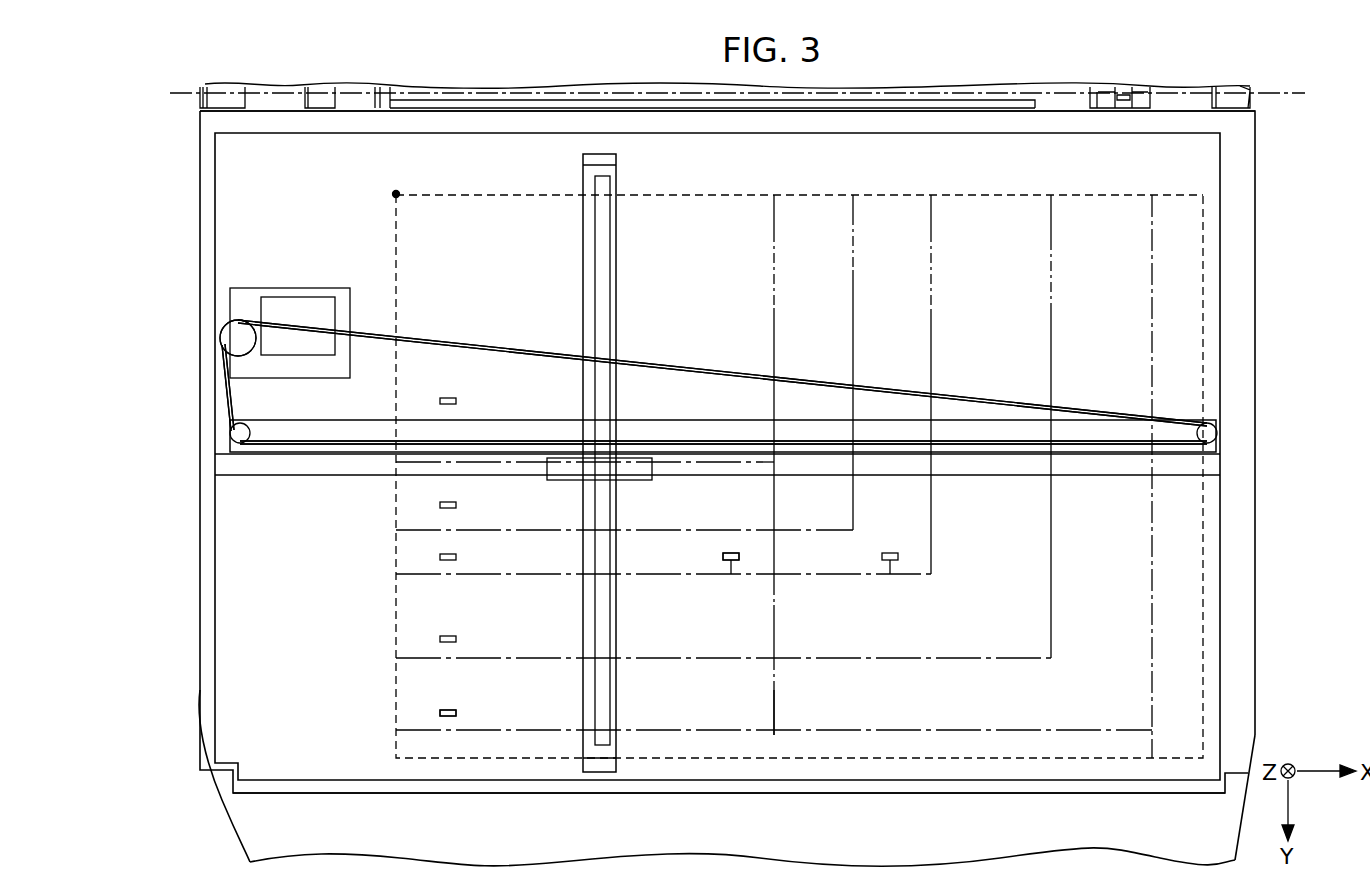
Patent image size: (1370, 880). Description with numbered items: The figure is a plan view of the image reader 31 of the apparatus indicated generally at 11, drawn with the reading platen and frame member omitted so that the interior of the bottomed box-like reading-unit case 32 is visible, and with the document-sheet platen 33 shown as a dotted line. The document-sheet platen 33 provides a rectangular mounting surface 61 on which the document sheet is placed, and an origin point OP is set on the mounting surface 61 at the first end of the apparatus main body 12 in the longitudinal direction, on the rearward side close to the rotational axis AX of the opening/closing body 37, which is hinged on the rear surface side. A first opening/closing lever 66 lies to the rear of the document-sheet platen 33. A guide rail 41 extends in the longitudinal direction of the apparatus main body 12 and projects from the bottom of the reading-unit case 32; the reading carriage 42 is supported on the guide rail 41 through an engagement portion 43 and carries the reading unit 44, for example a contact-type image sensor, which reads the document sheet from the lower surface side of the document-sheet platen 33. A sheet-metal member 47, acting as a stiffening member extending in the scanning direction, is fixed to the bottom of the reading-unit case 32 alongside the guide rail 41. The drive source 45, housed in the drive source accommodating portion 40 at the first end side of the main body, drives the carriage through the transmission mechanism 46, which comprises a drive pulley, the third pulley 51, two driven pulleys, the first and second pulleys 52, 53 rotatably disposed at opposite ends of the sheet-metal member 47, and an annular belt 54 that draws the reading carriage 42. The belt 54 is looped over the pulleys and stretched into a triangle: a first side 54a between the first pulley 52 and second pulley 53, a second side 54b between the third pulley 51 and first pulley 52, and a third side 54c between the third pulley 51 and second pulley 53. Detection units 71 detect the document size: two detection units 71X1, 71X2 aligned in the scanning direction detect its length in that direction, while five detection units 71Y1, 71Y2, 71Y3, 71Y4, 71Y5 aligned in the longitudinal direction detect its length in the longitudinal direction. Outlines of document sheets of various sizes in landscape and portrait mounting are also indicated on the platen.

The image reading apparatus 11 is at (1280, 241).
The apparatus main body 12 is at (243, 838).
The image reader 31 is at (1257, 540).
The reading-unit case 32 is at (313, 773).
The document-sheet platen 33 is at (1068, 758).
The opening/closing body 37 is at (200, 101).
The drive source accommodating portion 40 is at (248, 288).
The guide rail 41 is at (305, 476).
The reading carriage 42 is at (617, 287).
The engagement portion 43 is at (640, 480).
The reading unit 44 is at (600, 237).
The drive source 45 is at (318, 297).
The transmission mechanism 46 is at (214, 311).
The sheet-metal member 47 is at (648, 426).
The third pulley 51 is at (220, 338).
The first pulley 52 is at (1217, 433).
The second pulley 53 is at (230, 433).
The belt 54 is at (713, 440).
The first side 54a is at (805, 437).
The second side 54b is at (665, 362).
The third side 54c is at (237, 396).
The mounting surface 61 is at (687, 210).
The first opening/closing lever 66 is at (1121, 108).
The detection units 71 is at (740, 648).
The detection unit 71Y1 is at (457, 401).
The detection unit 71Y2 is at (457, 505).
The detection unit 71Y3 is at (457, 557).
The detection unit 71Y4 is at (457, 639).
The detection unit 71Y5 is at (457, 713).
The detection unit 71X1 is at (731, 566).
The detection unit 71X2 is at (890, 566).
The origin point OP is at (399, 198).
The rotational axis AX is at (1292, 97).